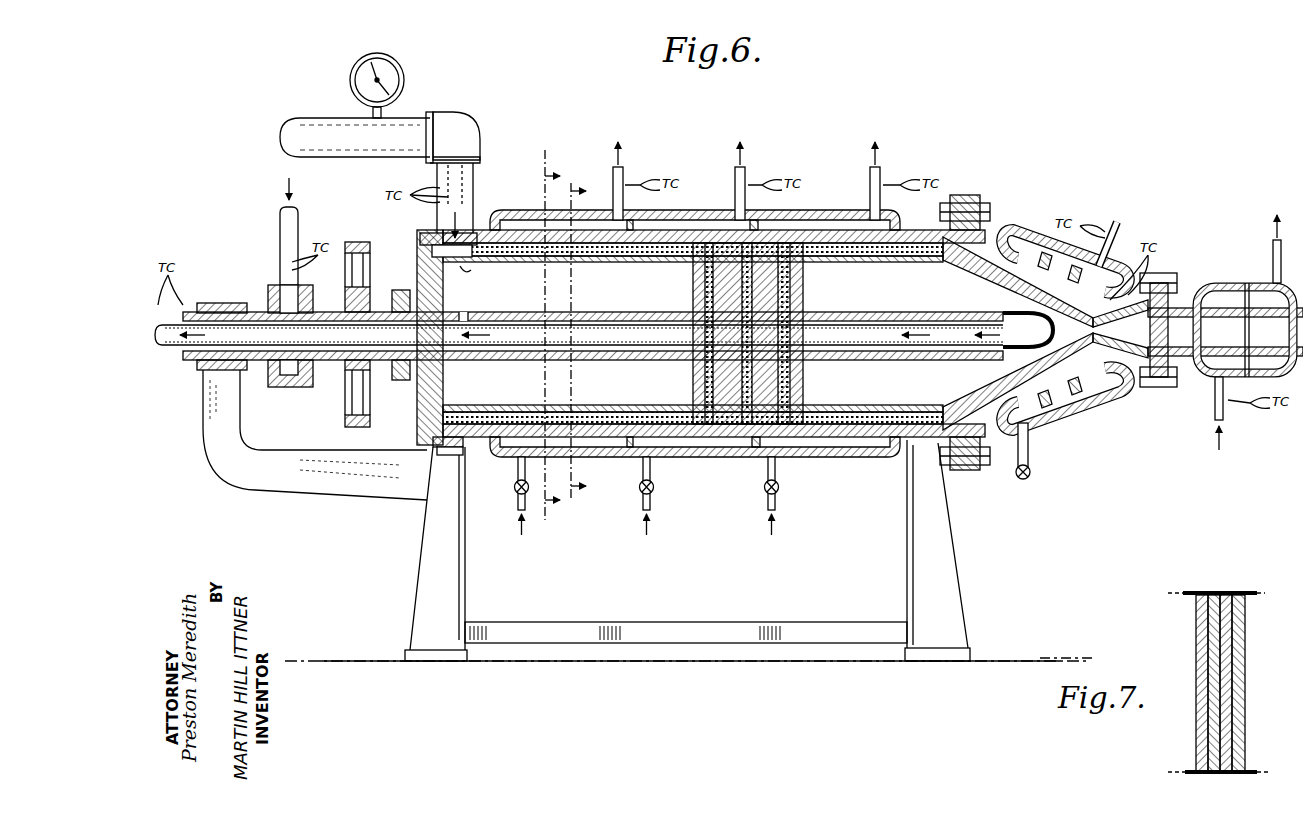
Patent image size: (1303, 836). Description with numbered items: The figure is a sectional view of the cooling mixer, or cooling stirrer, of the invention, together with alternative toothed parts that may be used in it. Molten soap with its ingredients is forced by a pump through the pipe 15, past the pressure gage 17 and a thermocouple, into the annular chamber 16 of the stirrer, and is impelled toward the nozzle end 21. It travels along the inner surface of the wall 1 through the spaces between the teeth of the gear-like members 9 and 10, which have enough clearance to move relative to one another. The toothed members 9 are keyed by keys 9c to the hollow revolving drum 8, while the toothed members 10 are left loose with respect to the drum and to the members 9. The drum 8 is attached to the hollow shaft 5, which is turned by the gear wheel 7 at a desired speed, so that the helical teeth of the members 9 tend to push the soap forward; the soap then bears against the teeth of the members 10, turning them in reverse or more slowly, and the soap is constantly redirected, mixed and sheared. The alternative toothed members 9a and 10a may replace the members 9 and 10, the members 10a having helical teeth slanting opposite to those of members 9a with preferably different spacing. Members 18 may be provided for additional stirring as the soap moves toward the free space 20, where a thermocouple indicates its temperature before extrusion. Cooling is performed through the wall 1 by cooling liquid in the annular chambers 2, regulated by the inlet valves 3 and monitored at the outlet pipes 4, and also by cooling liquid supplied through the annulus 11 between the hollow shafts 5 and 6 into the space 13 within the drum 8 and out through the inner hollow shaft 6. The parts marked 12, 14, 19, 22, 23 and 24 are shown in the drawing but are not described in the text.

In FIG. 6, the wall 1 is at (905, 232).
In FIG. 6, the annular chambers 2 is at (518, 210).
In FIG. 6, the inlet valves 3 is at (514, 487).
In FIG. 6, the outlet pipes 4 is at (623, 175).
In FIG. 6, the hollow shaft 5 is at (395, 312).
In FIG. 6, the inner hollow shaft 6 is at (158, 345).
In FIG. 6, the gear wheel 7 is at (358, 242).
In FIG. 6, the hollow revolving drum 8 is at (478, 382).
In FIG. 6, the toothed members 9 is at (548, 255).
In FIG. 6, the keys 9c is at (612, 272).
In FIG. 6, the toothed members 10 is at (790, 245).
In FIG. 6, the annulus 11 is at (268, 292).
In FIG. 6, the inlet opening 12 is at (486, 290).
In FIG. 6, the space 13 is at (737, 289).
In FIG. 6, the nose cone end 14 is at (1018, 307).
In FIG. 6, the pipe 15 is at (296, 120).
In FIG. 6, the annular chamber 16 is at (458, 240).
In FIG. 6, the pressure gage 17 is at (402, 62).
In FIG. 6, the members 18 is at (1062, 405).
In FIG. 6, the cone heating jacket 19 is at (1022, 238).
In FIG. 6, the free space 20 is at (1122, 372).
In FIG. 6, the nozzle end 21 is at (1175, 308).
In FIG. 6, the discharge pipe jacket 22 is at (1243, 285).
In FIG. 6, the packing gland 23 is at (398, 290).
In FIG. 6, the collar 24 is at (200, 370).
In FIG. 7, the toothed members 9a is at (1224, 595).
In FIG. 7, the toothed members 10a is at (1212, 594).